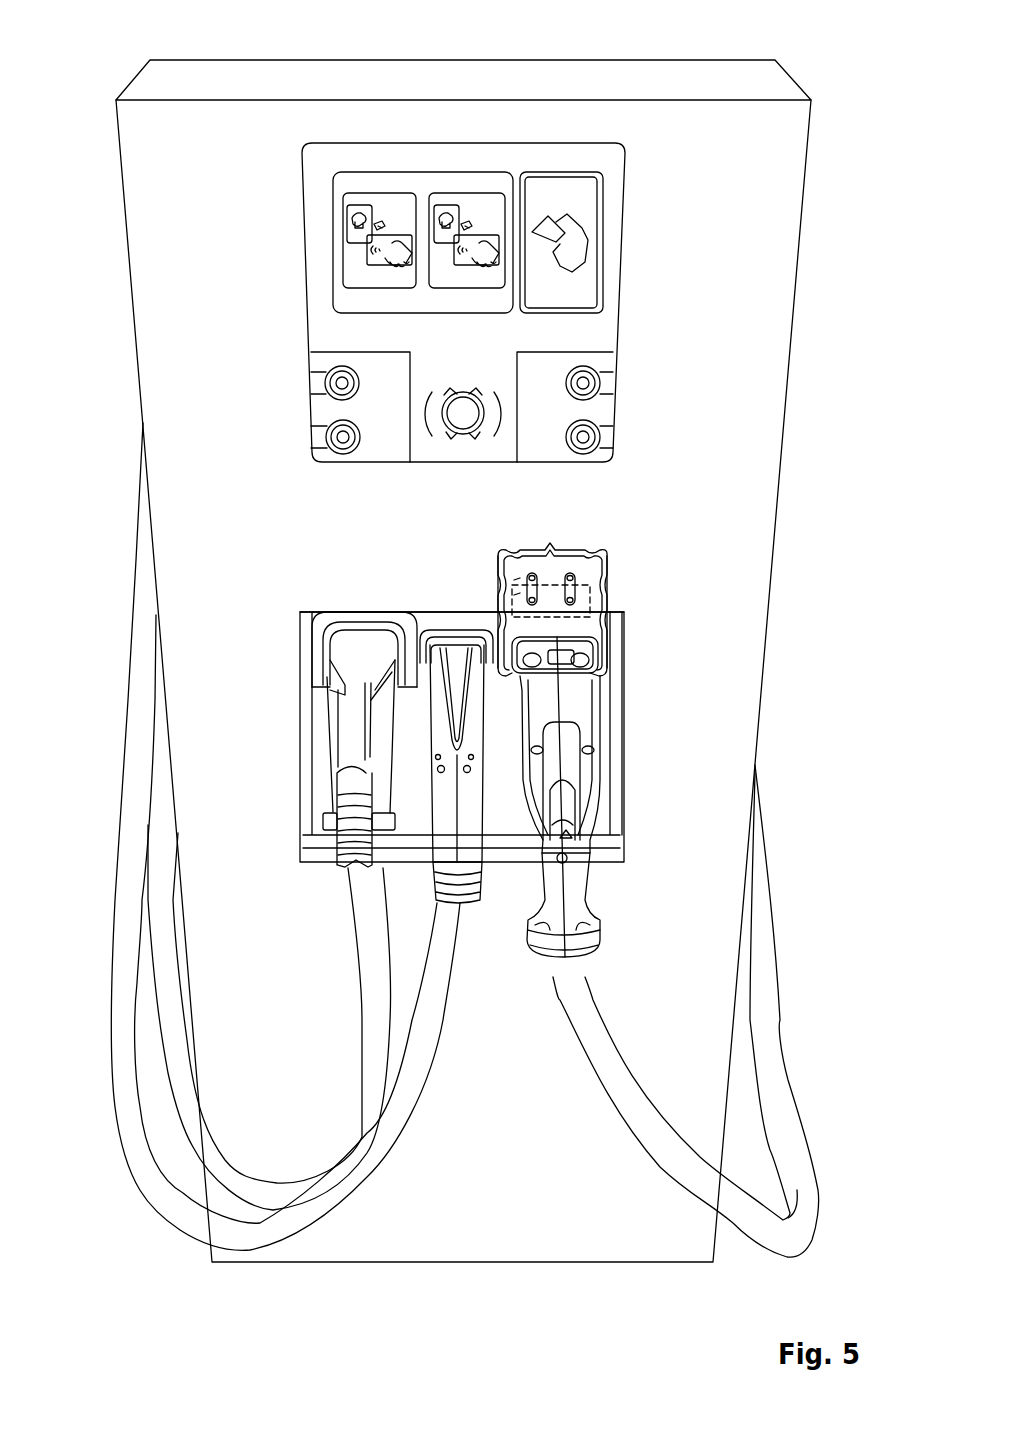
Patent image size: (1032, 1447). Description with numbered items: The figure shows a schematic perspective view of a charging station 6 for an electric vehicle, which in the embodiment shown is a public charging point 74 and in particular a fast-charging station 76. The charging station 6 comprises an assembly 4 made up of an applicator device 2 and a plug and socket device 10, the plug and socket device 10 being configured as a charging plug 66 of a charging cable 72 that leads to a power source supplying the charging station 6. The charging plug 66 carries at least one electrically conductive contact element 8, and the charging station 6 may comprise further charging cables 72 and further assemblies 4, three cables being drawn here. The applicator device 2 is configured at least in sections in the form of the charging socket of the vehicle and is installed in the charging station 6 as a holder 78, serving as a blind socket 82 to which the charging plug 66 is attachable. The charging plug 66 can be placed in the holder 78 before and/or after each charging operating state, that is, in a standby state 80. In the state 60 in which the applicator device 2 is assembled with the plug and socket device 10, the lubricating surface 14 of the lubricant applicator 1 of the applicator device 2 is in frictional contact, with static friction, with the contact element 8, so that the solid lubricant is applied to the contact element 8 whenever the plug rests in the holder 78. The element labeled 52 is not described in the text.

The lubricant applicator 1 is at (550, 548).
The applicator device 2 is at (534, 701).
The assembly 4 is at (488, 529).
The charging station 6 is at (499, 631).
The contact element 8 is at (525, 600).
The plug and socket device 10 is at (535, 797).
The lubricating surface 14 is at (530, 600).
The holder 52 is at (534, 701).
The state assembled with the plug and socket device 60 is at (594, 510).
The charging plug 66 is at (592, 737).
The charging cable 72 is at (177, 1077).
The public charging point 74 is at (499, 631).
The fast-charging station 76 is at (745, 38).
The holder 78 is at (534, 701).
The standby state 80 is at (624, 537).
The blind socket 82 is at (447, 630).